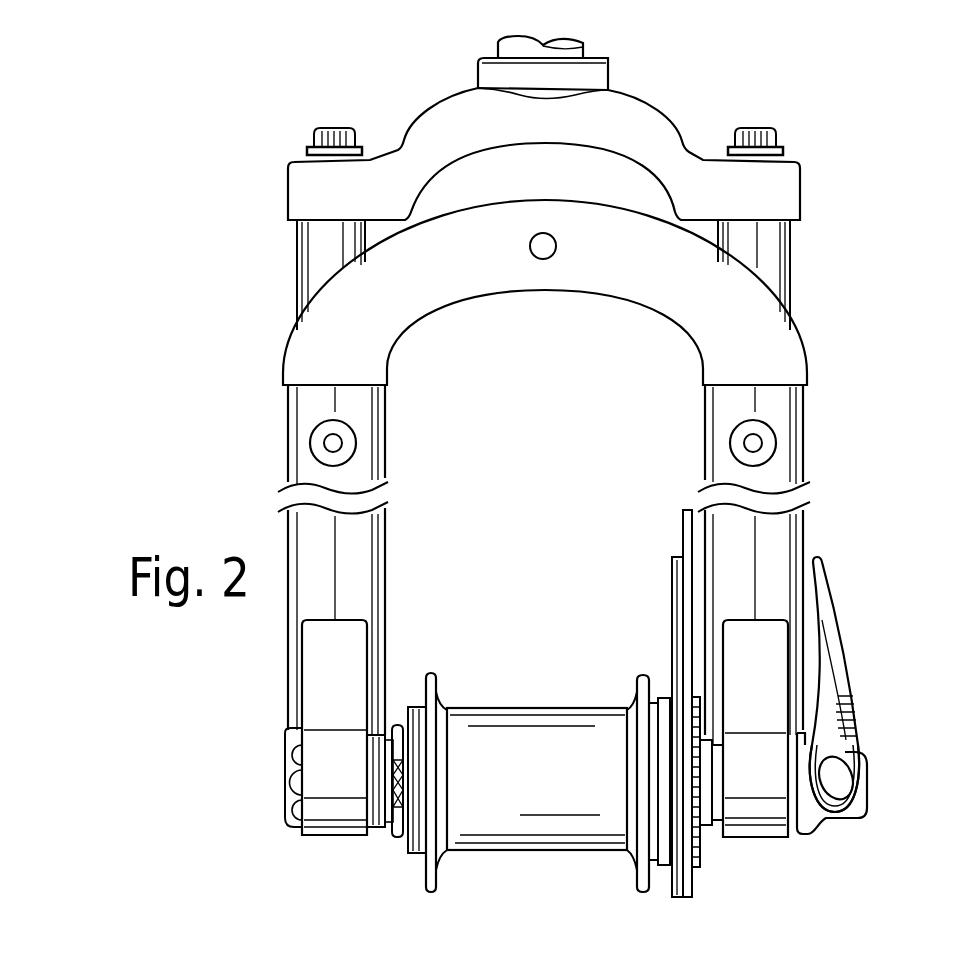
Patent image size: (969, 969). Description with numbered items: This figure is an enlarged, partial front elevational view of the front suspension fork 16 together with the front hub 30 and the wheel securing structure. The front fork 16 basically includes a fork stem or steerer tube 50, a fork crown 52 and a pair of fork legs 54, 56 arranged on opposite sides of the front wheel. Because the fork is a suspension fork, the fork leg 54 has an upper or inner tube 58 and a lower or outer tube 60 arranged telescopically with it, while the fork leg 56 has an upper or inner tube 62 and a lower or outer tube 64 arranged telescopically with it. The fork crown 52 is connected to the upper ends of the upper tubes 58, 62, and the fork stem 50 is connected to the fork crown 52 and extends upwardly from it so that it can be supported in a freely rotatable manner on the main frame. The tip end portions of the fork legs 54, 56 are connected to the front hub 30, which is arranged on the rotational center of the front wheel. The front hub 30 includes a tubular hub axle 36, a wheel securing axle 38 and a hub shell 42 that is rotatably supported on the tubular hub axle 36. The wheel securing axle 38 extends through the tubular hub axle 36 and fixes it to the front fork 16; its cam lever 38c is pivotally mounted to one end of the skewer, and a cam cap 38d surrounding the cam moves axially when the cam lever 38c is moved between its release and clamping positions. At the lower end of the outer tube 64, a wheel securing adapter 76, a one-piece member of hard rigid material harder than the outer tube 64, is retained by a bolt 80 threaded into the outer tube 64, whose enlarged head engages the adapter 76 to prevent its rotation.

The front suspension fork 16 is at (792, 107).
The fork stem or steerer tube 50 is at (587, 47).
The fork crown 52 is at (803, 160).
The upper or inner tube 58 is at (778, 253).
The upper or inner tube 62 is at (303, 257).
The fork leg 56 is at (284, 425).
The fork leg 54 is at (806, 437).
The lower or outer tube 60 is at (795, 537).
The lower or outer tube 64 is at (293, 605).
The bolt 80 is at (284, 733).
The wheel securing adapter 76 is at (282, 800).
The tubular hub axle 36 is at (383, 735).
The front hub 30 is at (522, 678).
The hub shell 42 is at (556, 722).
The wheel securing axle 38 is at (864, 825).
The cam lever 38c is at (832, 630).
The cam cap 38d is at (866, 765).